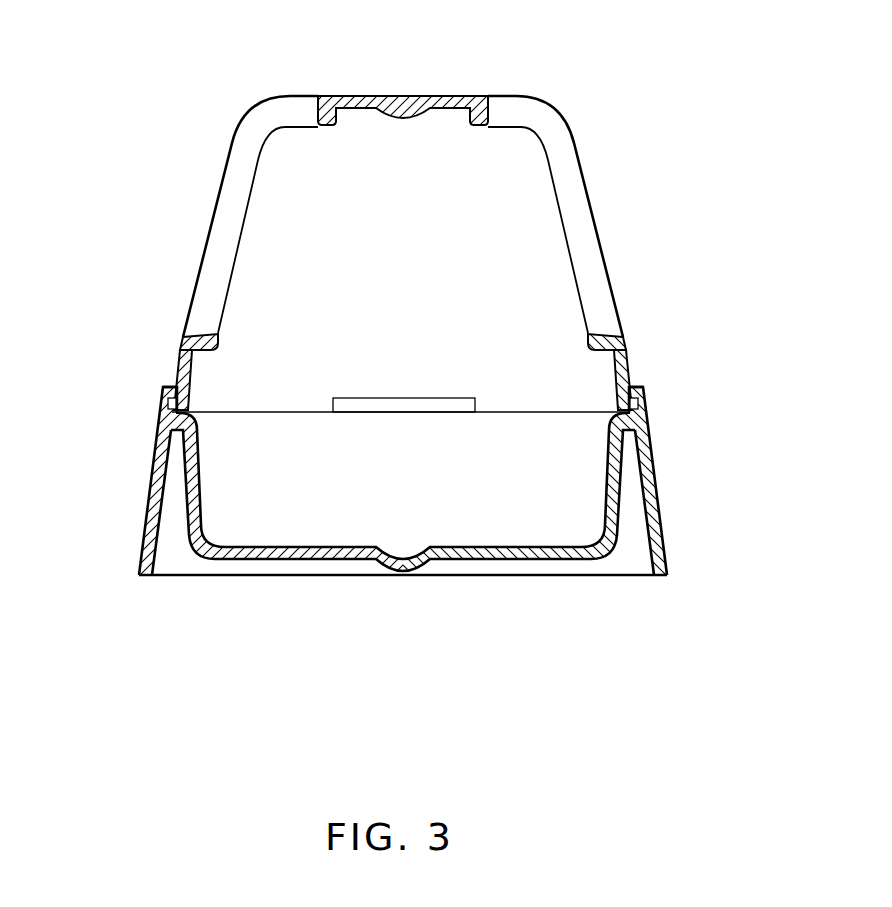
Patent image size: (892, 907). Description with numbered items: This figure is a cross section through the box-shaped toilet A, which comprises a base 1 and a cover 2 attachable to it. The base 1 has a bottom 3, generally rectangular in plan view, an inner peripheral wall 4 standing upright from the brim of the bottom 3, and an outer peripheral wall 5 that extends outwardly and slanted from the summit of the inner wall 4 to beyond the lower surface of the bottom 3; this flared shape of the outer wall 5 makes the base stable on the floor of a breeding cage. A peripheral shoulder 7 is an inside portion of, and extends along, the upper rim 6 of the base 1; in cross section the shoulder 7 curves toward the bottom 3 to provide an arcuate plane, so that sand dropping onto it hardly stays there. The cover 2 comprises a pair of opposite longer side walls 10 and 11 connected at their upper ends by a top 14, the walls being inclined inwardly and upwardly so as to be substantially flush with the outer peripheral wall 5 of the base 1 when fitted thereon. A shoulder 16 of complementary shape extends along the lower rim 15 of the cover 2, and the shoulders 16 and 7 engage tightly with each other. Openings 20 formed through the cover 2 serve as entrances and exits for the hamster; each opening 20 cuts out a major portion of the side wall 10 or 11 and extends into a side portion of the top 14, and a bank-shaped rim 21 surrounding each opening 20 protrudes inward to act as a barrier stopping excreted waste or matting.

The box-shaped toilet A is at (580, 74).
The base 1 is at (394, 487).
The cover 2 is at (398, 209).
The bottom 3 is at (309, 555).
The inner peripheral wall 4 is at (197, 476).
The outer peripheral wall 5 is at (152, 484).
The upper rim 6 is at (165, 413).
The peripheral shoulder 7 is at (188, 410).
The longer side wall 10 is at (625, 348).
The longer side wall 11 is at (183, 350).
The top 14 is at (441, 100).
The lower rim 15 is at (176, 384).
The shoulder 16 is at (165, 406).
The opening 20 is at (228, 168).
The bank-shaped rim 21 is at (207, 330).